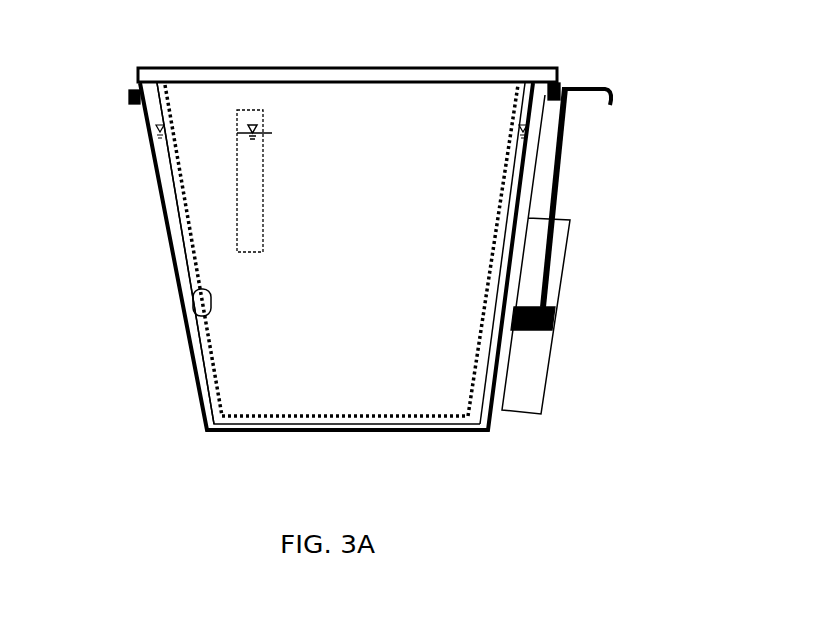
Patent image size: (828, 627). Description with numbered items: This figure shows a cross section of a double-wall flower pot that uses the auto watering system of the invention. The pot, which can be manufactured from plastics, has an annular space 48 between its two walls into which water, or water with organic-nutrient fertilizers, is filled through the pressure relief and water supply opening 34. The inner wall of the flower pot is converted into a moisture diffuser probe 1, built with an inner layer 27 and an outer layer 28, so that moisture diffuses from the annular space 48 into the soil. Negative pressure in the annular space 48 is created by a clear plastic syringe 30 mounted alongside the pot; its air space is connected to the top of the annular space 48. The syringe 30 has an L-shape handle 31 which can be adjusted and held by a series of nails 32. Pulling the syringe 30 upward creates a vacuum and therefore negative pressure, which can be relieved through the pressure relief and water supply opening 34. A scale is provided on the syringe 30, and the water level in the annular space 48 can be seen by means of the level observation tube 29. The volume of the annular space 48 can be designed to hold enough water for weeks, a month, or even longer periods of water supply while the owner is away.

The moisture diffuser probe 1 is at (234, 320).
The inner layer 27 is at (470, 253).
The outer layer 28 is at (370, 250).
The level observation tube 29 is at (291, 181).
The clear plastic syringe 30 is at (564, 260).
The L-shape handle 31 is at (623, 54).
The nails 32 is at (616, 195).
The pressure relief and water supply opening 34 is at (97, 52).
The annular space 48 is at (138, 253).